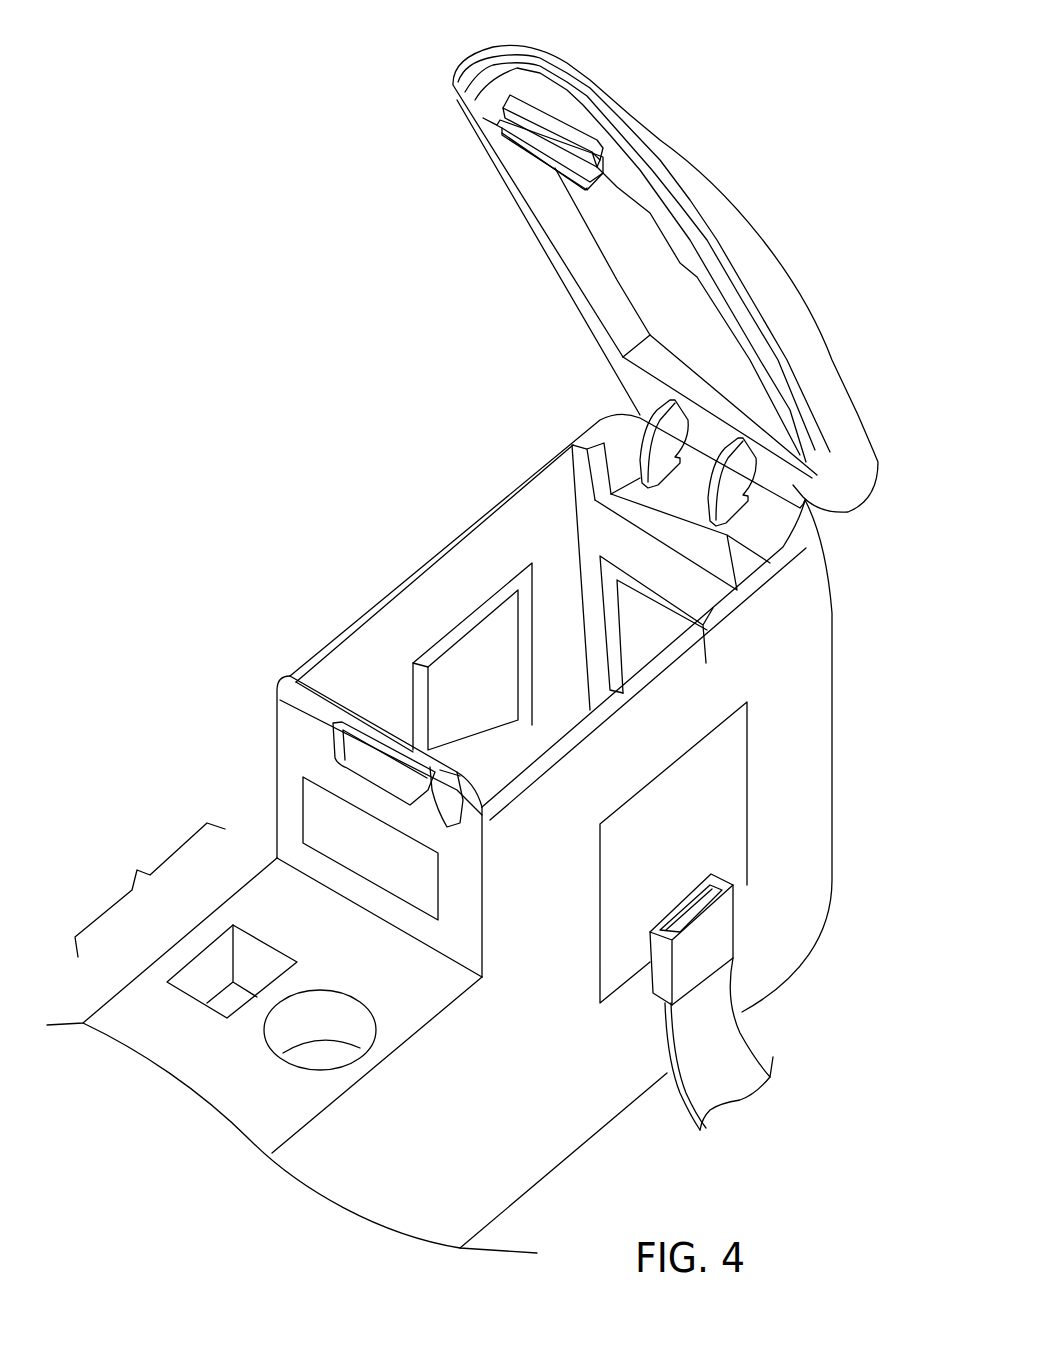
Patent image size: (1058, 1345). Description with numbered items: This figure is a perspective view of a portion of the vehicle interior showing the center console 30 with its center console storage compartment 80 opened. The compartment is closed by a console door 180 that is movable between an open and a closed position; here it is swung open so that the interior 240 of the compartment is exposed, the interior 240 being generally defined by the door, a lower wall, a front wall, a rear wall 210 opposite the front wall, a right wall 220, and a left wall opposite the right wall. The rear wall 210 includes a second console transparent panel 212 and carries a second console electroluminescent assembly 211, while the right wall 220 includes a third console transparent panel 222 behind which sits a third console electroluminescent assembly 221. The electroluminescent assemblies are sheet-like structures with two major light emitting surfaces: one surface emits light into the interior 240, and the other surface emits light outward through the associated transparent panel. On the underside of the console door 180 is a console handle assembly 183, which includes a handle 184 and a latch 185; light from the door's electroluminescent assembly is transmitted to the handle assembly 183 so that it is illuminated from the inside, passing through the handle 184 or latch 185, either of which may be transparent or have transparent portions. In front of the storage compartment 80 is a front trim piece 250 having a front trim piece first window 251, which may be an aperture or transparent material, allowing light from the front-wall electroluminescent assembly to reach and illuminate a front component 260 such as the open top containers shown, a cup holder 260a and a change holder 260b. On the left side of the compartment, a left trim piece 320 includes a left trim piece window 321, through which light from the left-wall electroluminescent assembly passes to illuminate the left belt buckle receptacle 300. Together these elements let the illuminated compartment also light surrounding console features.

The center console 30 is at (130, 1017).
The center console storage compartment 80 is at (254, 512).
The console door 180 is at (782, 300).
The console handle assembly 183 is at (547, 104).
The handle 184 is at (573, 143).
The latch 185 is at (548, 148).
The rear wall 210 is at (548, 476).
The second console electroluminescent assembly 211 is at (637, 643).
The second console transparent panel 212 is at (600, 577).
The right wall 220 is at (362, 655).
The third console electroluminescent assembly 221 is at (463, 657).
The third console transparent panel 222 is at (517, 587).
The interior 240 is at (538, 514).
The front trim piece 250 is at (307, 735).
The front trim piece first window 251 is at (323, 823).
The front component 260 is at (150, 890).
The cup holder 260a is at (345, 1023).
The change holder 260b is at (220, 967).
The left belt buckle receptacle 300 is at (715, 928).
The left trim piece 320 is at (801, 741).
The left trim piece window 321 is at (621, 968).